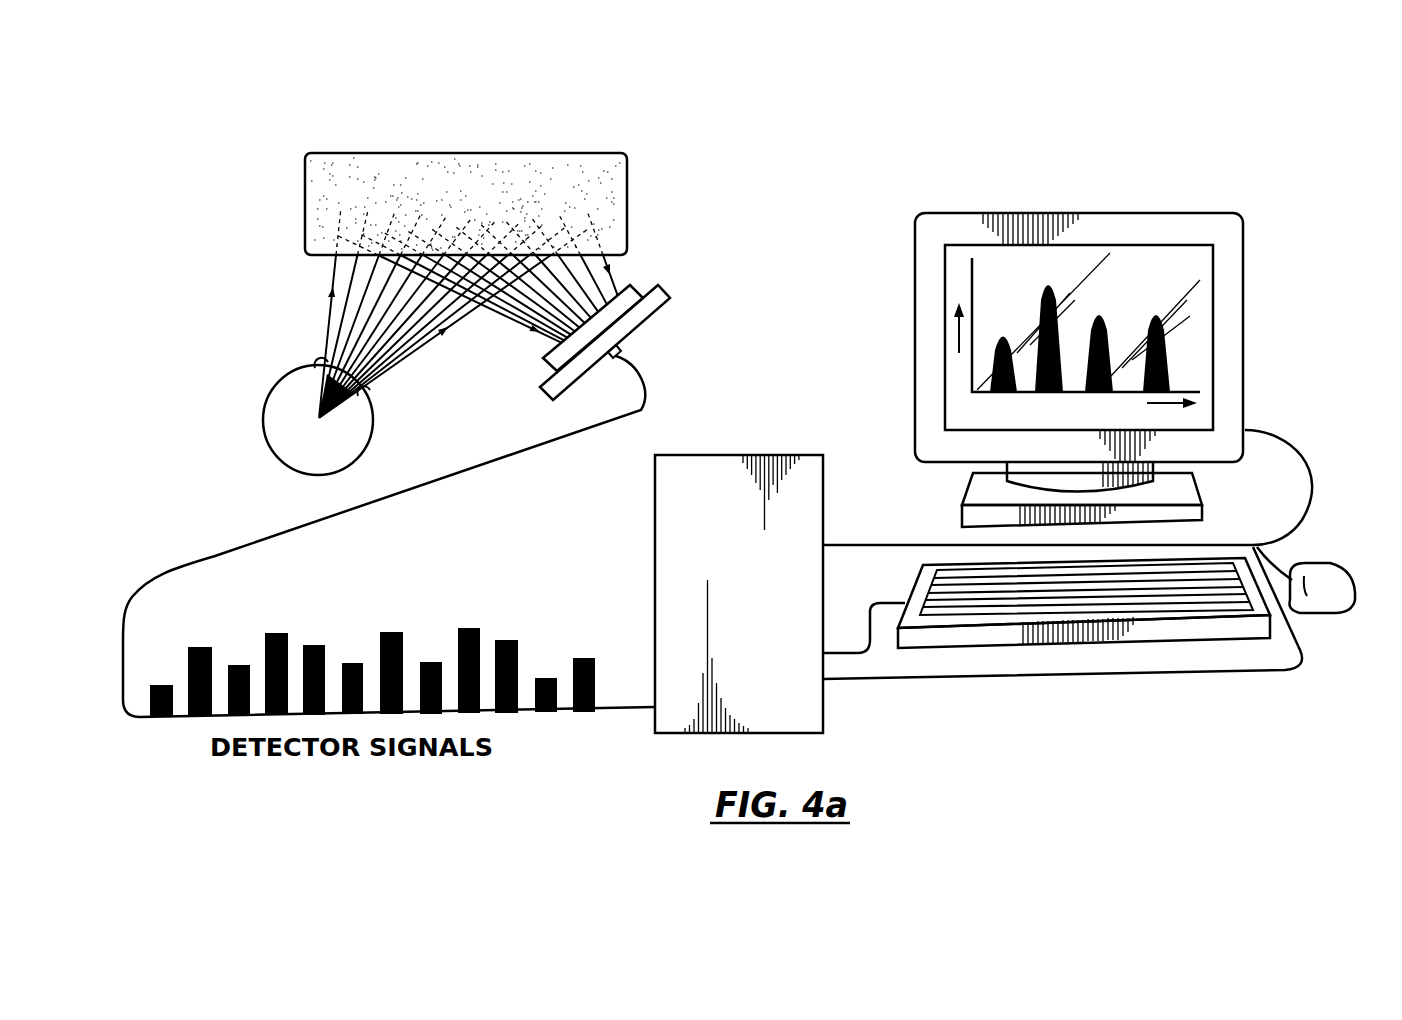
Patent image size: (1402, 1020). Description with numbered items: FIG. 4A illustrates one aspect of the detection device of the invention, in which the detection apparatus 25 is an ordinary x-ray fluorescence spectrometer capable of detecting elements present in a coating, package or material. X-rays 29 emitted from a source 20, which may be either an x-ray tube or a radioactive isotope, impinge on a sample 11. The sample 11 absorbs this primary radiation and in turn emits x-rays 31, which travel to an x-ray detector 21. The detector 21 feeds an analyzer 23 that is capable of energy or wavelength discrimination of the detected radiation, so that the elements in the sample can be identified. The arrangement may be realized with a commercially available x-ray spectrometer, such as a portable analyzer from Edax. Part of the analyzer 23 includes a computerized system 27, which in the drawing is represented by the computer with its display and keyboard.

The sample 11 is at (487, 165).
The source 20 is at (300, 448).
The x-ray detector 21 is at (627, 323).
The analyzer 23 is at (780, 692).
The detection apparatus 25 is at (1089, 388).
The computerized system 27 is at (1140, 198).
The x-rays 29 is at (322, 318).
The x-rays 31 is at (625, 265).